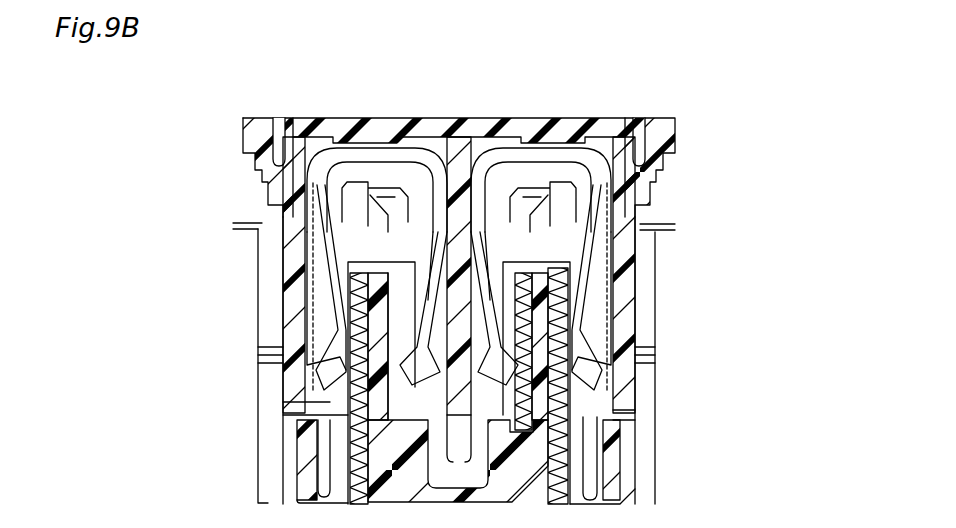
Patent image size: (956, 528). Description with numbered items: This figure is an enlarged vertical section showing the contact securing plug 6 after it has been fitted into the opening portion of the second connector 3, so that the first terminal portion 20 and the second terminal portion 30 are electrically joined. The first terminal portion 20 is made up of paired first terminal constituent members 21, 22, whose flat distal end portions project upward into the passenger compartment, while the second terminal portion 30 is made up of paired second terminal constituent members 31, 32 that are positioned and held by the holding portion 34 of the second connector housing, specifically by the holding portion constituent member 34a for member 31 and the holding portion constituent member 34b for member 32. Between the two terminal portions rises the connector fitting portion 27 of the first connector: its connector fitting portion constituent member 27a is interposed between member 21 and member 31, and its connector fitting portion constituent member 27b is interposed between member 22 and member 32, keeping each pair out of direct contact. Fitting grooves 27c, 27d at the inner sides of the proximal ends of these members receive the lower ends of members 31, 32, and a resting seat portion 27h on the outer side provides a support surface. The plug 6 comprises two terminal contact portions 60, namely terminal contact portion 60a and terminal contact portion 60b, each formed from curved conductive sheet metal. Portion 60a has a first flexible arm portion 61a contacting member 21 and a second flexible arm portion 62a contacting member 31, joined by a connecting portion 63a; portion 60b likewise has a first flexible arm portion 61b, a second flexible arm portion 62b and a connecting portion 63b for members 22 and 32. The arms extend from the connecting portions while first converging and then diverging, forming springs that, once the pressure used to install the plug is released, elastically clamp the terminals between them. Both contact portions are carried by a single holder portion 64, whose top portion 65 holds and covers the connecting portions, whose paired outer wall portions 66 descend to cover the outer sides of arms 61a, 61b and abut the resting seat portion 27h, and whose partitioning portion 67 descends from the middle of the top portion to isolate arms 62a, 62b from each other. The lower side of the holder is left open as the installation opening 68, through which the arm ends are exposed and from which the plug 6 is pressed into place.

The contact securing plug 6 is at (663, 108).
The second connector 3 is at (253, 214).
The holding portion 34 is at (440, 201).
The holding portion constituent member 34a is at (664, 229).
The holding portion constituent member 34b is at (243, 225).
The connector fitting portion 27 is at (450, 360).
The connector fitting portion constituent member 27a is at (636, 250).
The connector fitting portion constituent member 27b is at (283, 249).
The fitting groove 27c is at (613, 412).
The fitting groove 27d is at (330, 405).
The resting seat portion 27h is at (300, 448).
The holder portion 64 is at (460, 251).
The top portion 65 is at (447, 142).
The outer wall portion 66 is at (300, 290).
The partitioning portion 67 is at (462, 212).
The terminal contact portion 60 is at (458, 204).
The terminal contact portion 60a is at (650, 53).
The terminal contact portion 60b is at (385, 53).
The first flexible arm portion 61a is at (614, 180).
The first flexible arm portion 61b is at (305, 165).
The second flexible arm portion 62a is at (492, 196).
The second flexible arm portion 62b is at (410, 160).
The connecting portion 63a is at (548, 146).
The connecting portion 63b is at (372, 146).
The second terminal portion 30 is at (456, 383).
The second terminal constituent member 31 is at (530, 312).
The second terminal constituent member 32 is at (358, 319).
The first terminal portion 20 is at (457, 347).
The first terminal constituent member 21 is at (636, 348).
The first terminal constituent member 22 is at (283, 349).
The installation opening 68 is at (325, 466).